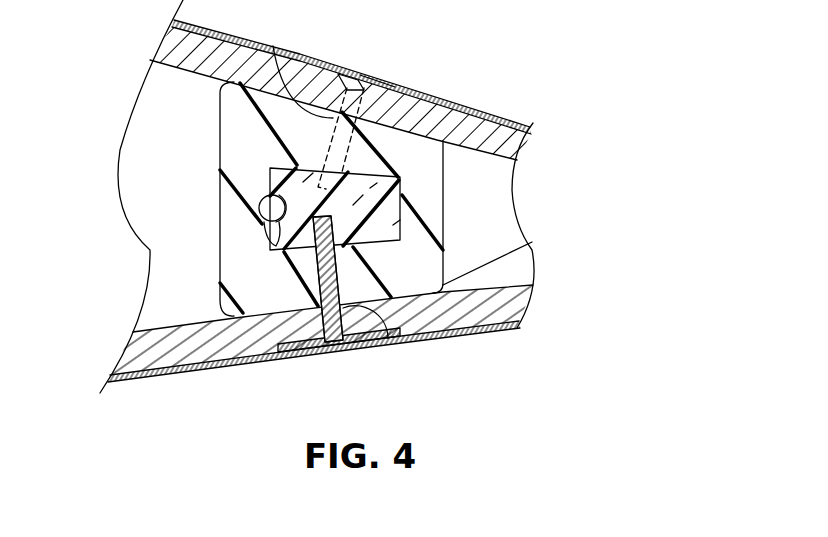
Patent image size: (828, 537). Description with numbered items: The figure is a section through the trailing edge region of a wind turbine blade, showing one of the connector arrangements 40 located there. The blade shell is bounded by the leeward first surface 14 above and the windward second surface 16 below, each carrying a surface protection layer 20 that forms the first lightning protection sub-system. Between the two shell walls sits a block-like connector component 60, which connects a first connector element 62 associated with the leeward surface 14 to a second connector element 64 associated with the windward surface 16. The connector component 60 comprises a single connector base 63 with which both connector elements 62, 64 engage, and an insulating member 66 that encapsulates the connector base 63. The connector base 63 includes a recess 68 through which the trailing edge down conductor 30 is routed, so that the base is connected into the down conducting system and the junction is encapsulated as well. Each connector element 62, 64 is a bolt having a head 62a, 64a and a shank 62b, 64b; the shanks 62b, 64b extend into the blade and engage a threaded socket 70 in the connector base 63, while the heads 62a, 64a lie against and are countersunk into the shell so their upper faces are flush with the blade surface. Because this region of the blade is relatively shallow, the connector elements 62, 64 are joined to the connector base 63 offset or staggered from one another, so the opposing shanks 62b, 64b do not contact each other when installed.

The first surface 14 is at (507, 118).
The second surface 16 is at (163, 373).
The surface protection layer 20 is at (463, 107).
The trailing edge down conductor 30 is at (268, 210).
The connector arrangement 40 is at (540, 207).
The connector component 60 is at (196, 155).
The first connector element 62 is at (337, 58).
The head 62a is at (370, 76).
The shank 62b is at (273, 46).
The connector base 63 is at (393, 209).
The second connector element 64 is at (309, 358).
The head 64a is at (340, 341).
The shank 64b is at (388, 326).
The insulating member 66 is at (431, 176).
The recess 68 is at (276, 250).
The threaded socket 70 is at (294, 162).